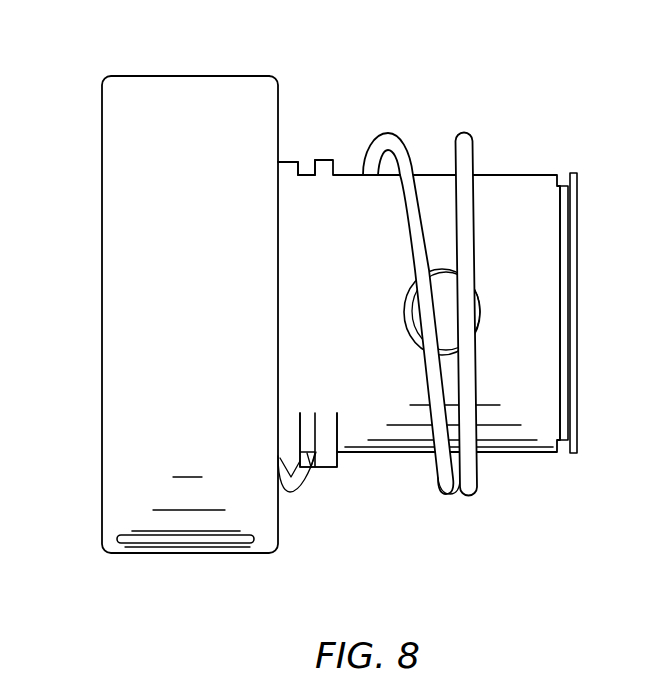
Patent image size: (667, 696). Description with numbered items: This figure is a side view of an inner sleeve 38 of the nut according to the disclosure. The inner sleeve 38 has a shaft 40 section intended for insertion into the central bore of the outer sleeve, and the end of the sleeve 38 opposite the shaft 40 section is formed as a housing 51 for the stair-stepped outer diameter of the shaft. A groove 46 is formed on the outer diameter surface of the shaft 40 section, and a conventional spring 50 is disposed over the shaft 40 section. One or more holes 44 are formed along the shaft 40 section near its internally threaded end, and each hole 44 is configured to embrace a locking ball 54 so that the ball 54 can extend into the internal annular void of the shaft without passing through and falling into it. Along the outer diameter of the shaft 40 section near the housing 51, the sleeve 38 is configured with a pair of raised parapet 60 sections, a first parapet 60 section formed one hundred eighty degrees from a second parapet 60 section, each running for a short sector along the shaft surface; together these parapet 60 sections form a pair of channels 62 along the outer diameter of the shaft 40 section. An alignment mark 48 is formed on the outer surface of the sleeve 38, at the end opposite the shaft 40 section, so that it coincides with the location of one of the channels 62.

The inner sleeve 38 is at (116, 167).
The shaft section 40 is at (547, 428).
The hole 44 is at (405, 300).
The groove 46 is at (564, 185).
The alignment mark 48 is at (156, 539).
The spring 50 is at (478, 478).
The housing 51 is at (213, 75).
The locking ball 54 is at (412, 322).
The parapet section 60 is at (289, 161).
The channel 62 is at (308, 161).